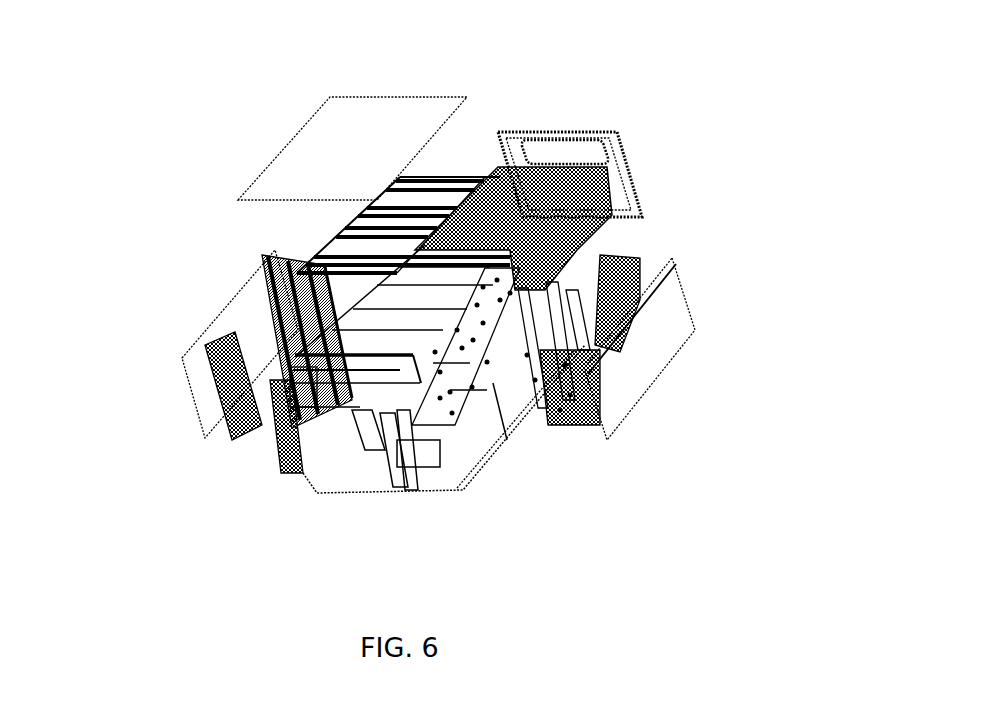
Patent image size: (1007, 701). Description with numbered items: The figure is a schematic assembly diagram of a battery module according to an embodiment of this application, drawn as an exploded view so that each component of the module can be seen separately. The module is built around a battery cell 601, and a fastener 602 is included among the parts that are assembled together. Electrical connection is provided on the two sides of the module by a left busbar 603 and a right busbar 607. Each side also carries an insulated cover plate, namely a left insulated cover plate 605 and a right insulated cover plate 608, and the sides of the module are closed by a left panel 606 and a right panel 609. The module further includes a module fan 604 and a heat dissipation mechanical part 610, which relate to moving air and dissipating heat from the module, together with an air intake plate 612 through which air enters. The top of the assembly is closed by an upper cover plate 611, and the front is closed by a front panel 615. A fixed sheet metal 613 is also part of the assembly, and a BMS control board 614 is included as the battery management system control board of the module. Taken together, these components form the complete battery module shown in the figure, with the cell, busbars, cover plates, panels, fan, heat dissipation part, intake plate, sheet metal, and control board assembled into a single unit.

The battery cell 601 is at (382, 348).
The fastener 602 is at (320, 235).
The left busbar 603 is at (245, 358).
The module fan 604 is at (290, 463).
The left insulated cover plate 605 is at (223, 405).
The left panel 606 is at (202, 398).
The right busbar 607 is at (493, 383).
The right insulated cover plate 608 is at (563, 387).
The right panel 609 is at (637, 392).
The heat dissipation mechanical part 610 is at (560, 203).
The upper cover plate 611 is at (333, 135).
The air intake plate 612 is at (607, 147).
The fixed sheet metal 613 is at (572, 300).
The BMS control board 614 is at (410, 440).
The front panel 615 is at (343, 450).